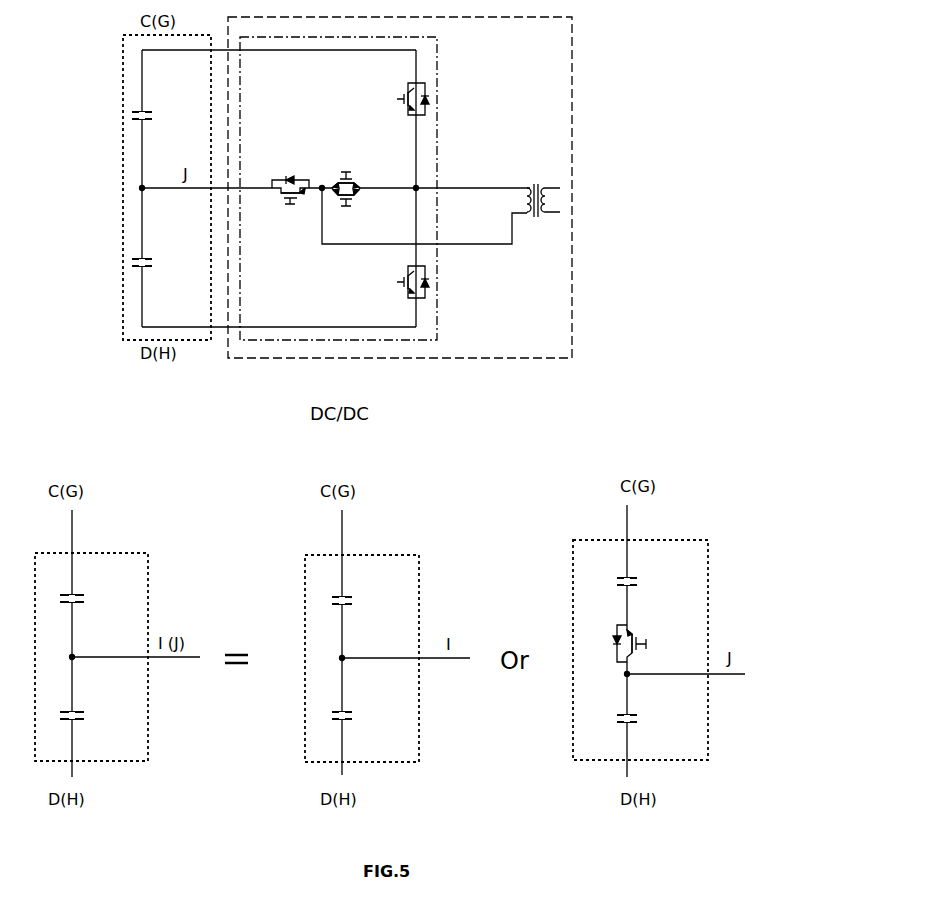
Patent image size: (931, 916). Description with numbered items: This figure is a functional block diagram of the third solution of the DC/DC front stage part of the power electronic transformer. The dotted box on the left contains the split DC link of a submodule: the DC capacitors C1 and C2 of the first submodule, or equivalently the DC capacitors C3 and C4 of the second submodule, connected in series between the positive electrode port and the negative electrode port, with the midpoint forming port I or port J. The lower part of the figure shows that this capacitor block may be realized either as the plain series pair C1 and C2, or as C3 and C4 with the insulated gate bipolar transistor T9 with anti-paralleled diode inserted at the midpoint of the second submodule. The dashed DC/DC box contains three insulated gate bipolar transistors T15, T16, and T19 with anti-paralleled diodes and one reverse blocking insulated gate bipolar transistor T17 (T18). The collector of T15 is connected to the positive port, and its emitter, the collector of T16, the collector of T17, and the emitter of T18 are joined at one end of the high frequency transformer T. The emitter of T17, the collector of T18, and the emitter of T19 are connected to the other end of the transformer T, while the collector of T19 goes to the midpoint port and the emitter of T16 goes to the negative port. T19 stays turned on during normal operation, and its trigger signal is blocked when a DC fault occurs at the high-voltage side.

The DC capacitor C1 is at (224, 354).
The DC capacitor C2 is at (224, 485).
The DC capacitor C3 is at (379, 372).
The DC capacitor C4 is at (379, 505).
The insulated gate bipolar transistor with anti-paralleled diode T15 is at (392, 99).
The insulated gate bipolar transistor with anti-paralleled diode T16 is at (392, 282).
The reverse blocking insulated gate bipolar transistor T17 is at (347, 167).
The reverse blocking insulated gate bipolar transistor T18 is at (347, 212).
The insulated gate bipolar transistor with anti-paralleled diode T19 is at (290, 206).
The insulated gate bipolar transistor with anti-paralleled diode T9 is at (611, 643).
The high frequency transformer T is at (543, 213).